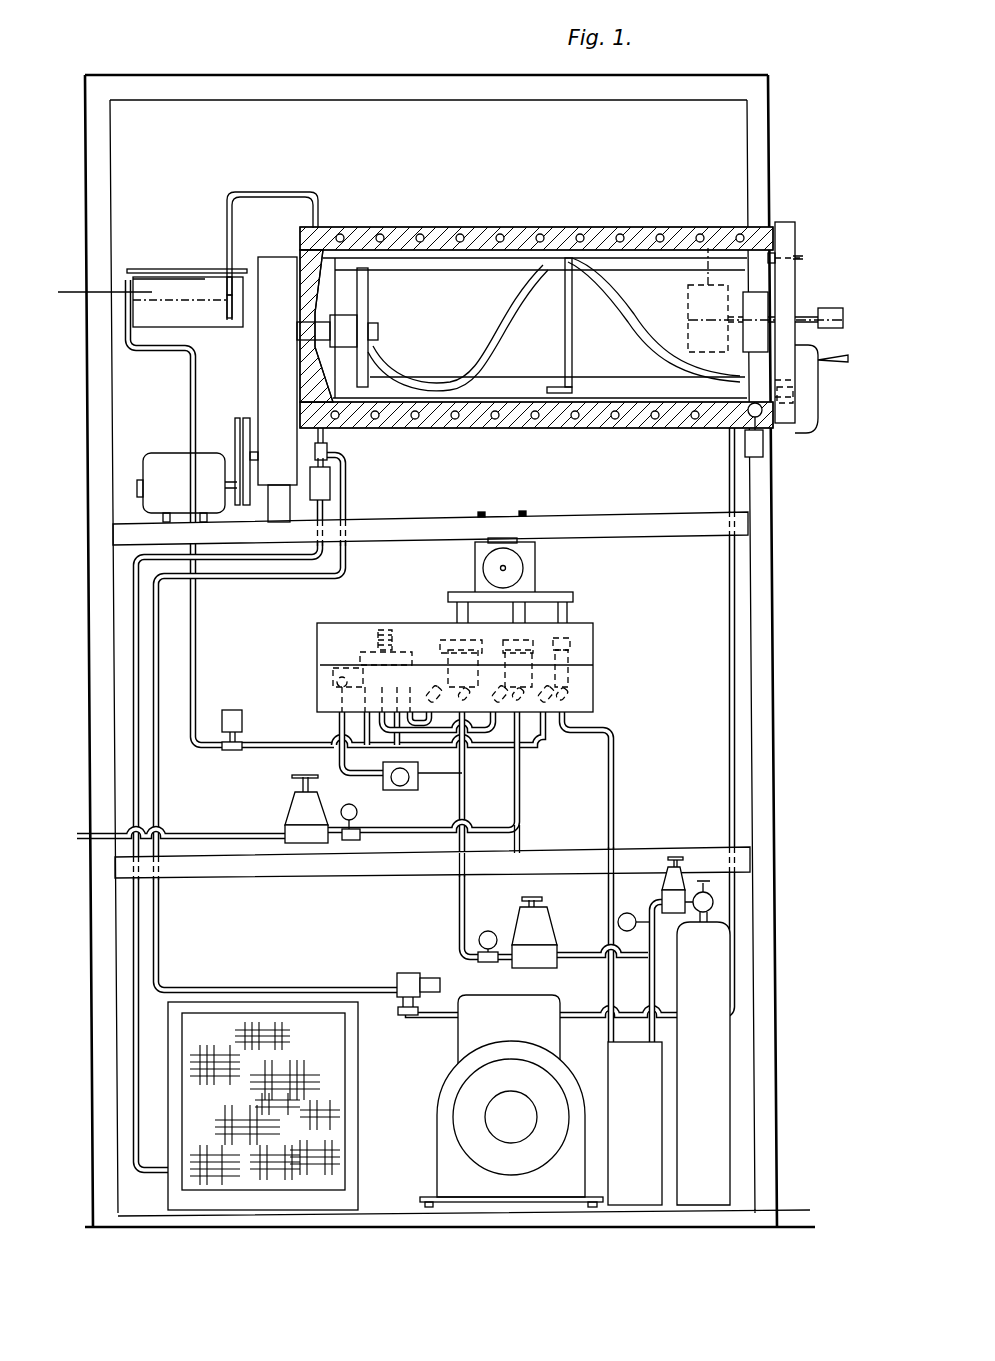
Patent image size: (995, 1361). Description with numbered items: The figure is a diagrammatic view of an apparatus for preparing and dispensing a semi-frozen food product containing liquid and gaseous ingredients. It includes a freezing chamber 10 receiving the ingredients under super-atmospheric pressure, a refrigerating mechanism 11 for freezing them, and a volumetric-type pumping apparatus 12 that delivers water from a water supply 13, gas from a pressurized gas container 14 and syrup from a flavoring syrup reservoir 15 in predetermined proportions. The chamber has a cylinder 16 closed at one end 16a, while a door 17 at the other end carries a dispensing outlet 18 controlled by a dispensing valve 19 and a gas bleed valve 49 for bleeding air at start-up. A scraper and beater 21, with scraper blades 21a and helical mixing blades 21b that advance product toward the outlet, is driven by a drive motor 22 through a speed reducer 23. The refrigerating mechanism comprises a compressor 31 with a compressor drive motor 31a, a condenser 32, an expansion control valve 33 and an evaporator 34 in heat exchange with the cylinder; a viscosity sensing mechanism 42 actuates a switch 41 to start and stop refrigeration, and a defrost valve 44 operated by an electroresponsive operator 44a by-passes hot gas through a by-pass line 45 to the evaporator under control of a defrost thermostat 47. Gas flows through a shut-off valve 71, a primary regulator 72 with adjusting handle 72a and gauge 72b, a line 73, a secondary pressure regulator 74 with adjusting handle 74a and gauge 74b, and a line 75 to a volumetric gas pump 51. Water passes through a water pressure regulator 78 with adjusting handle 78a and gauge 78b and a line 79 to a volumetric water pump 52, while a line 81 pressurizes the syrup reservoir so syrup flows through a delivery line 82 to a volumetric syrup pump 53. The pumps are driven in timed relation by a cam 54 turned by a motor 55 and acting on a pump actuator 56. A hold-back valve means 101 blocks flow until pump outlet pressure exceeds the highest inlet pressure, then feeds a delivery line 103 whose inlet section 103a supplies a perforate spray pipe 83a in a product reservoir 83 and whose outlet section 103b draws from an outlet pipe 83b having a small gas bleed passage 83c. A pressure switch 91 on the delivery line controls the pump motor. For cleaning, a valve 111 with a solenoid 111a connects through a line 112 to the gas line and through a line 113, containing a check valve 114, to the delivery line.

The freezing chamber 10 is at (662, 240).
The refrigerating mechanism 11 is at (386, 1232).
The volumetric-type pumping apparatus 12 is at (598, 640).
The water supply 13 is at (80, 833).
The pressurized gas container 14 is at (690, 1096).
The flavoring syrup reservoir 15 is at (643, 1103).
The cylinder 16 is at (492, 395).
The closed end 16a is at (313, 253).
The door 17 is at (787, 233).
The dispensing outlet 18 is at (818, 397).
The dispensing valve 19 is at (810, 357).
The scraper and beater 21 is at (478, 338).
The scraper blades 21a is at (410, 258).
The mixing or agitating blades 21b is at (637, 327).
The drive motor 22 is at (180, 460).
The speed reducer 23 is at (258, 388).
The compressor 31 is at (440, 1127).
The compressor drive motor 31a is at (460, 1147).
The condenser 32 is at (352, 1082).
The expansion control valve 33 is at (332, 483).
The evaporator 34 is at (405, 236).
The viscosity sensing switch 41 is at (833, 310).
The viscosity sensing mechanism 42 is at (713, 247).
The defrost valve 44 is at (403, 975).
The electroresponsive operator 44a is at (434, 987).
The by-pass line 45 is at (162, 947).
The defrost thermostat 47 is at (765, 455).
The gas bleed valve 49 is at (775, 257).
The volumetric gas pump 51 is at (430, 640).
The volumetric water pump 52 is at (533, 640).
The volumetric syrup pump 53 is at (576, 640).
The cam 54 is at (520, 557).
The pump drive motor 55 is at (475, 542).
The pump actuator 56 is at (540, 625).
The shut-off valve 71 is at (713, 900).
The primary regulator 72 is at (678, 890).
The adjusting handle 72a is at (672, 857).
The gauge 72b is at (628, 913).
The line 73 is at (583, 950).
The secondary pressure regulator 74 is at (540, 927).
The adjusting handle 74a is at (532, 897).
The gauge 74b is at (481, 933).
The line 75 is at (467, 893).
The water pressure regulator 78 is at (288, 828).
The adjusting handle 78a is at (292, 777).
The gauge 78b is at (365, 842).
The line 79 is at (523, 797).
The line 81 is at (654, 992).
The delivery line 82 is at (608, 823).
The product reservoir 83 is at (205, 328).
The perforate spray pipe 83a is at (170, 268).
The outlet pipe 83b is at (232, 285).
The gas bleed passage 83c is at (228, 307).
The pressure switch 91 is at (233, 710).
The hold-back valve means 101 is at (375, 640).
The delivery line 103 is at (312, 742).
The inlet section 103a is at (124, 270).
The outlet section 103b is at (240, 188).
The valve 111 is at (381, 784).
The solenoid 111a is at (399, 786).
The line 112 is at (440, 777).
The line 113 is at (342, 757).
The check valve 114 is at (328, 680).